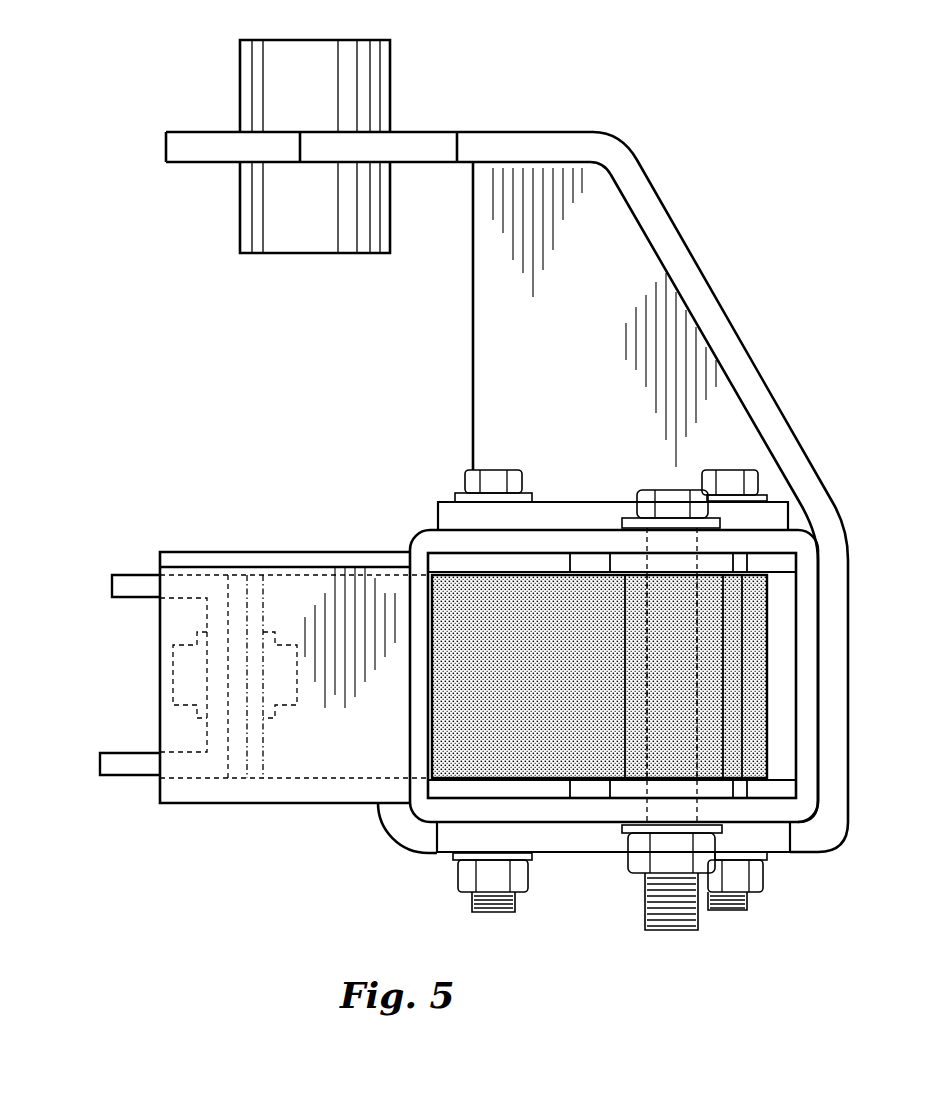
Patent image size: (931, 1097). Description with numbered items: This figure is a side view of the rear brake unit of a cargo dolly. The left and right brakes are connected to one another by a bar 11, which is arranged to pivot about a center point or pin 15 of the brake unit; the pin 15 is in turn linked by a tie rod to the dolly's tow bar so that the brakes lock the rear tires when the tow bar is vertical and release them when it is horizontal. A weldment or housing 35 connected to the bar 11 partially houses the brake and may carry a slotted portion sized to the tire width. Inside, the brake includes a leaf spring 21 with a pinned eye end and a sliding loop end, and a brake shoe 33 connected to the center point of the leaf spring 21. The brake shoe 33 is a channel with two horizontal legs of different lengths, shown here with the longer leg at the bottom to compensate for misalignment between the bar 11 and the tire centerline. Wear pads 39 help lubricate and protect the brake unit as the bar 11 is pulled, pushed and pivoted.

The bar 11 is at (413, 532).
The pin 15 is at (390, 73).
The leaf spring 21 is at (475, 740).
The brake shoe 33 is at (116, 767).
The weldment or housing 35 is at (228, 552).
The wear pads 39 is at (558, 502).